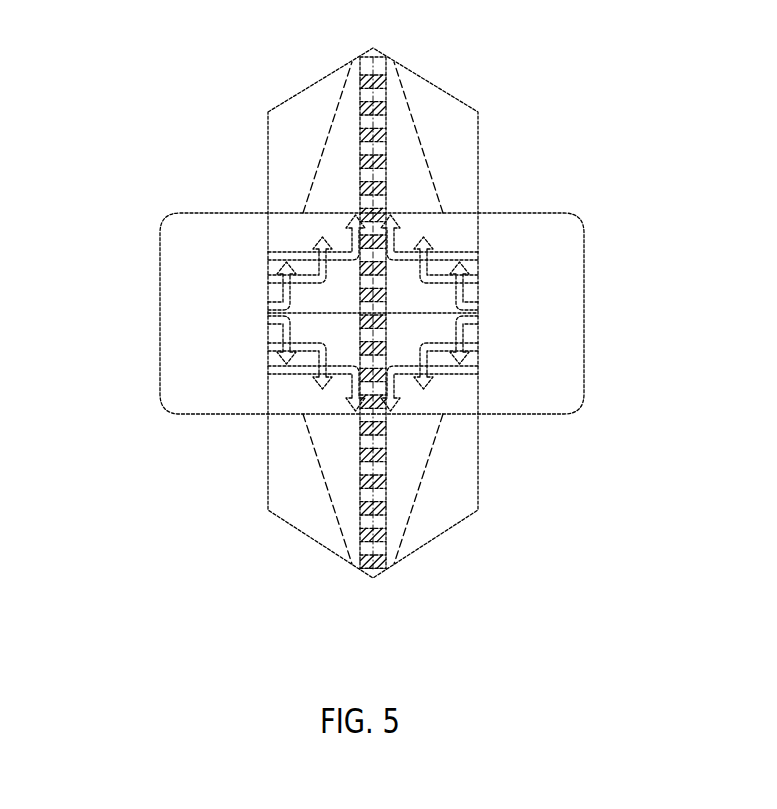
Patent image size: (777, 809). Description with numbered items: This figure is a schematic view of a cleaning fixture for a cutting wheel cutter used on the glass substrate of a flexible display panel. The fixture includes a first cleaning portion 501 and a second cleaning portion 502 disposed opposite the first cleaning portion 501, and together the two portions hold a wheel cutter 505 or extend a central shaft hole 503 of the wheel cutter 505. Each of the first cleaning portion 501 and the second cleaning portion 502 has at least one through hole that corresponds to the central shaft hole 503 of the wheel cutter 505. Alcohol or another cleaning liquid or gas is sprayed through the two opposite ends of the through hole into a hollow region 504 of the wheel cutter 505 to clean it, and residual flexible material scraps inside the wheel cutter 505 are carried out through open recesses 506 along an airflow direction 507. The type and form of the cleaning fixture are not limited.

The first cleaning portion 501 is at (188, 357).
The second cleaning portion 502 is at (531, 354).
The central shaft hole 503 is at (474, 230).
The hollow region 504 is at (413, 184).
The wheel cutter 505 is at (477, 481).
The open recesses 506 is at (389, 119).
The airflow direction 507 is at (467, 268).